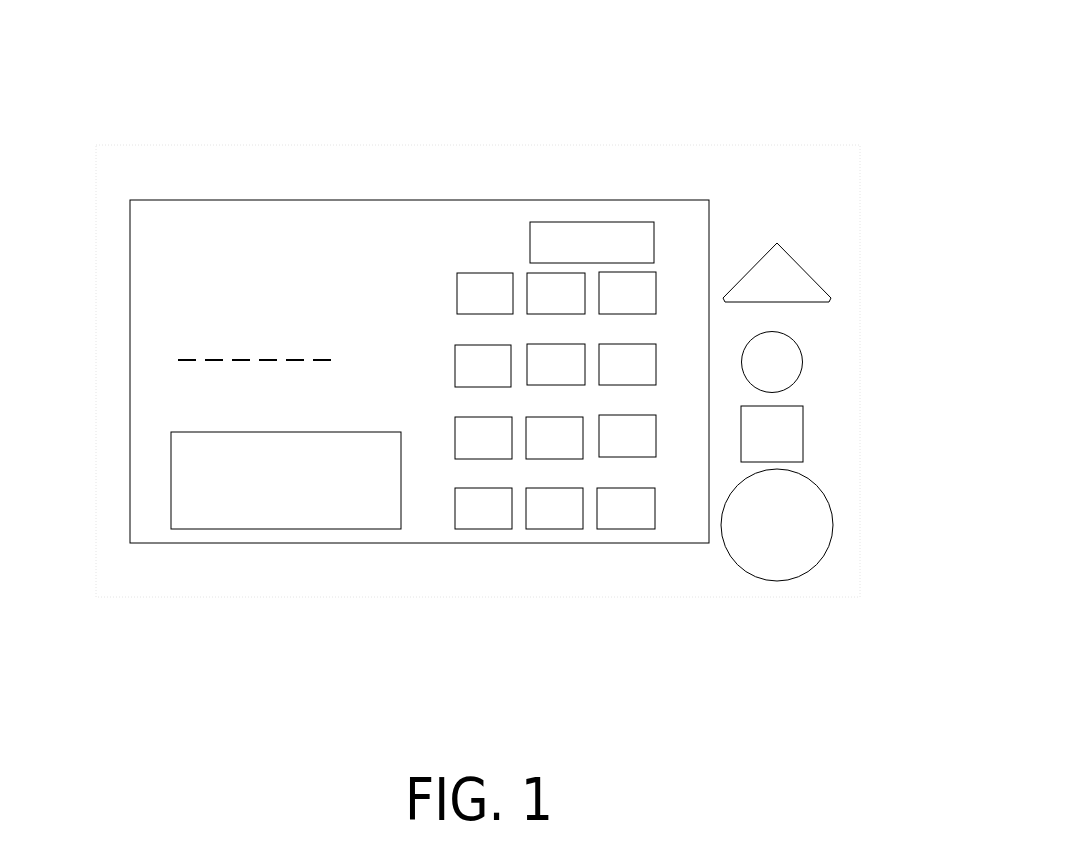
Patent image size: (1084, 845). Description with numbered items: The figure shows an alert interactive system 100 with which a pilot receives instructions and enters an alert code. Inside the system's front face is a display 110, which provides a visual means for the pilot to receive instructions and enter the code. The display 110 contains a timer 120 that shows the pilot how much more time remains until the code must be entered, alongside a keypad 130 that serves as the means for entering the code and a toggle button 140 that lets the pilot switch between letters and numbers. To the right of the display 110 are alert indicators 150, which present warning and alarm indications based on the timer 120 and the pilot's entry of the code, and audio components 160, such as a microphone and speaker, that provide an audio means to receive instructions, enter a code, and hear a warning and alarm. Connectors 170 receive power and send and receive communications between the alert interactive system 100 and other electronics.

The alert interactive system 100 is at (681, 118).
The display 110 is at (295, 198).
The timer 120 is at (323, 432).
The keypad 130 is at (484, 272).
The toggle button 140 is at (592, 222).
The alert indicators 150 is at (801, 363).
The audio components 160 is at (804, 433).
The connectors 170 is at (834, 523).